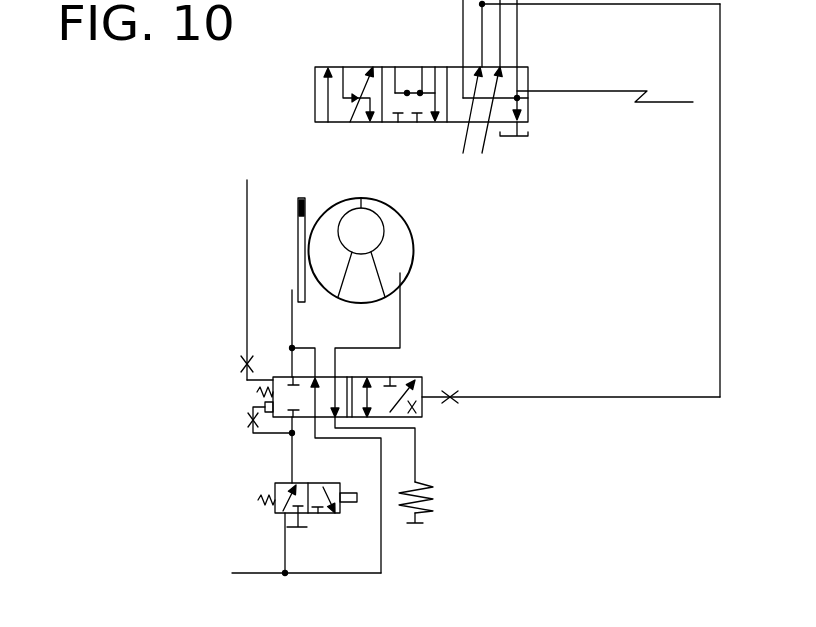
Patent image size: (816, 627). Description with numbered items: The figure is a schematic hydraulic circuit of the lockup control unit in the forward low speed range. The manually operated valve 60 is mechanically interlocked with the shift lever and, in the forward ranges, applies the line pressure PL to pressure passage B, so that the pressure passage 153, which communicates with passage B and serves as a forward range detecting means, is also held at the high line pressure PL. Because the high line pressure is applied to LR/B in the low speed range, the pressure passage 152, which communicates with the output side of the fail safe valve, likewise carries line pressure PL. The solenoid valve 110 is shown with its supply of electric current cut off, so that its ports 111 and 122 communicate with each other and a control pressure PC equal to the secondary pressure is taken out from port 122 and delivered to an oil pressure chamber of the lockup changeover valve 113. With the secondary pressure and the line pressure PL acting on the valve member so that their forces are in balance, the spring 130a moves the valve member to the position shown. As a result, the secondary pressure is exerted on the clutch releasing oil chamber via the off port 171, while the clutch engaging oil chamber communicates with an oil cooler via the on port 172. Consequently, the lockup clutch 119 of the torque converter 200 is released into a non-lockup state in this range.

The manually operated valve 60 is at (528, 117).
The lockup clutch 119 is at (305, 208).
The torque converter 200 is at (413, 248).
The pressure passage 152 is at (247, 300).
The off port 171 is at (292, 325).
The on port 172 is at (403, 323).
The pressure passage 153 is at (525, 397).
The spring 130a is at (324, 411).
The lockup changeover valve 113 is at (422, 410).
The port 122 is at (292, 462).
The solenoid valve 110 is at (333, 513).
The port 111 is at (272, 576).